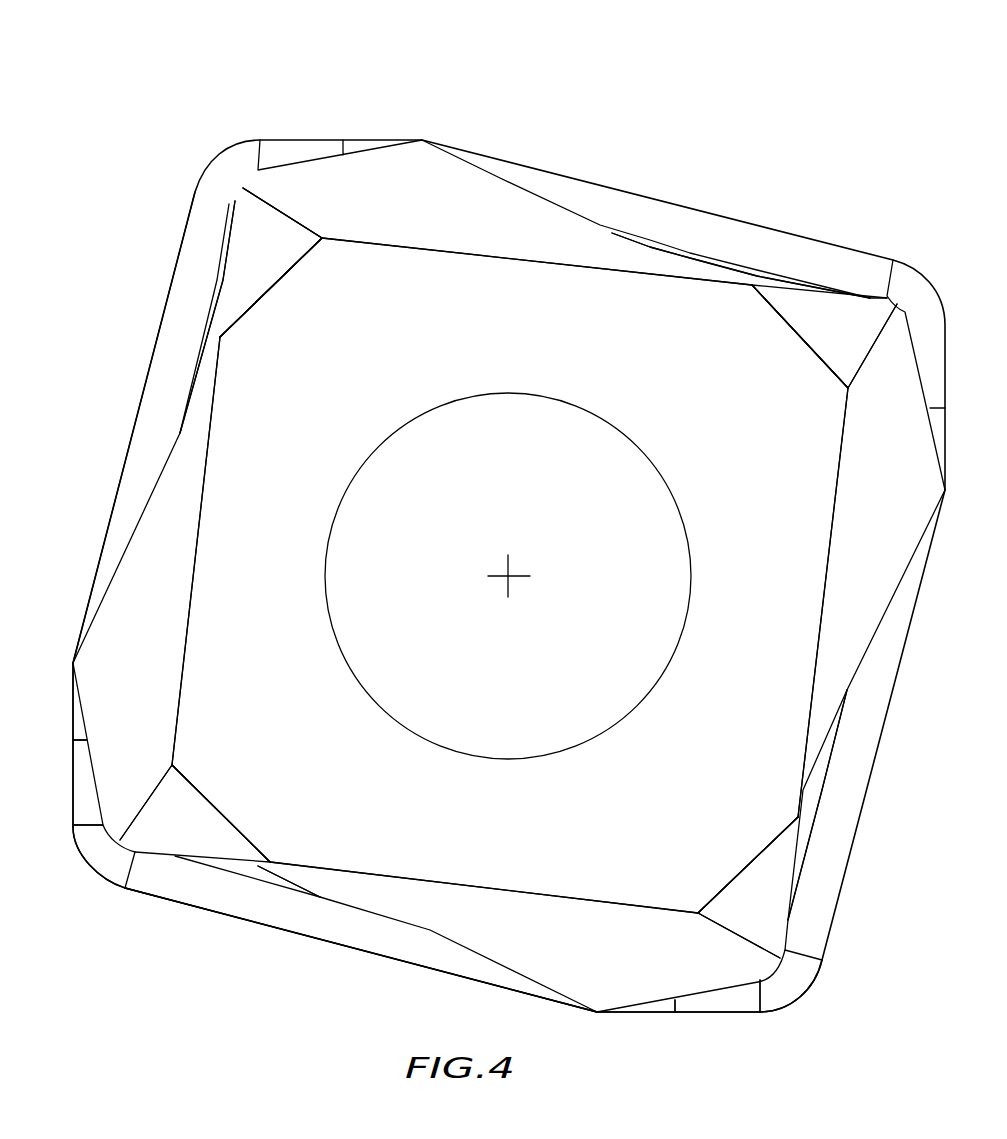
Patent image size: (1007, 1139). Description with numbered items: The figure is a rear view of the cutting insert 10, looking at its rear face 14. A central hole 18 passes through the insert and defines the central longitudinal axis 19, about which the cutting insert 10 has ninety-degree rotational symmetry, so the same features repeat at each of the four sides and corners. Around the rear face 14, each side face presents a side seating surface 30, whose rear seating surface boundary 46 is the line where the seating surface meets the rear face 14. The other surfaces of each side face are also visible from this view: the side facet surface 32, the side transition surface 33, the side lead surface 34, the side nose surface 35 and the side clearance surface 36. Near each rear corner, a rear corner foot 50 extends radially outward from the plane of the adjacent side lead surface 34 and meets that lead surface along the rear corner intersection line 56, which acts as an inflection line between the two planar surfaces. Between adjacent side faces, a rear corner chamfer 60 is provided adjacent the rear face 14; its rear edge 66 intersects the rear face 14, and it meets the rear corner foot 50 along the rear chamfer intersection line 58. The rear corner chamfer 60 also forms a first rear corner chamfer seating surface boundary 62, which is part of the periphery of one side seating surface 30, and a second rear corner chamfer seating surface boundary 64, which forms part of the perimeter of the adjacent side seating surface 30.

The cutting insert 10 is at (210, 103).
The rear face 14 is at (388, 364).
The central hole 18 is at (362, 477).
The central longitudinal axis 19 is at (511, 585).
The side seating surface 30 is at (436, 206).
The side facet surface 32 is at (80, 712).
The side transition surface 33 is at (598, 1014).
The side lead surface 34 is at (330, 940).
The side nose surface 35 is at (103, 868).
The side clearance surface 36 is at (86, 782).
The rear seating surface boundary 46 is at (460, 262).
The rear corner foot 50 is at (216, 287).
The rear corner intersection line 56 is at (207, 330).
The rear chamfer intersection line 58 is at (227, 257).
The rear corner chamfer 60 is at (253, 277).
The first rear corner chamfer seating surface boundary 62 is at (222, 337).
The second rear corner chamfer seating surface boundary 64 is at (268, 205).
The rear edge 66 is at (307, 257).